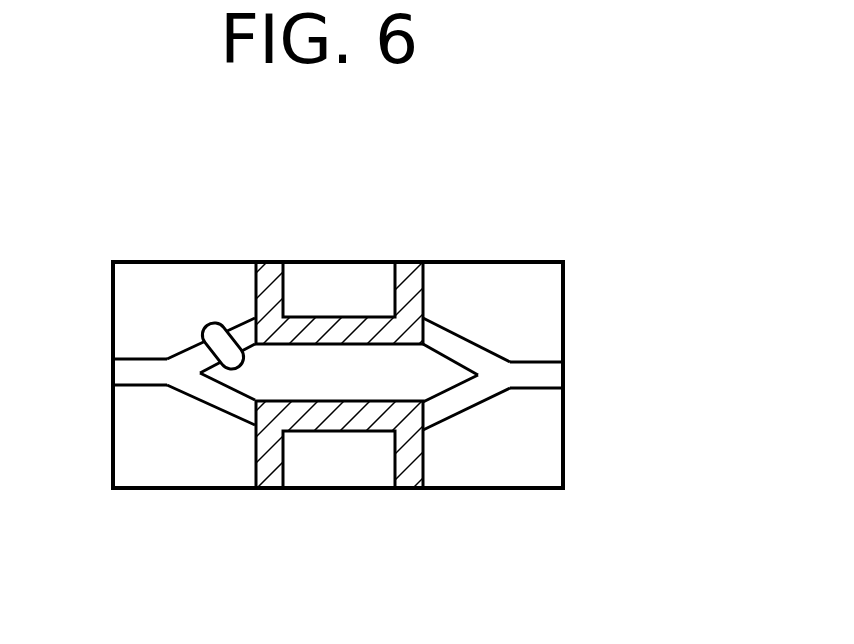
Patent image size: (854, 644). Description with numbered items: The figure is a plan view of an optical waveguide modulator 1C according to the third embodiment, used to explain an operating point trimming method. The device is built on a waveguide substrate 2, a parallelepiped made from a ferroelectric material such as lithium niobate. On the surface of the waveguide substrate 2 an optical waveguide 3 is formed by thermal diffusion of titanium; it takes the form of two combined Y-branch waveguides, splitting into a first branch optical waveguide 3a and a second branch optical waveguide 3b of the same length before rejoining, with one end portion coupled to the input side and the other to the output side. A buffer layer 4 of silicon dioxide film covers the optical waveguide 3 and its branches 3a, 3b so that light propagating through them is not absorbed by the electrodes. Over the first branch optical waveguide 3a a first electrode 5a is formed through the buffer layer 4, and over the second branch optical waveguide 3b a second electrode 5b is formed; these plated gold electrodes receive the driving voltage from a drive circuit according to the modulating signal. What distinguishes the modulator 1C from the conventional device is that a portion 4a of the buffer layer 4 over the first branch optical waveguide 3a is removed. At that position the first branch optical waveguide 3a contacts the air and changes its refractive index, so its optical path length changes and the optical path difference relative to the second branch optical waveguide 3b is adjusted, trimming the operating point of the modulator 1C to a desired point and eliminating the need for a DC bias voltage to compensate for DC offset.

The optical waveguide modulator 1C is at (369, 249).
The waveguide substrate 2 is at (530, 490).
The optical waveguide 3 is at (135, 349).
The first branch optical waveguide 3a is at (183, 350).
The second branch optical waveguide 3b is at (220, 417).
The buffer layer 4 is at (163, 451).
The removed portion of the buffer layer 4a is at (212, 312).
The first electrode 5a is at (318, 316).
The second electrode 5b is at (340, 432).